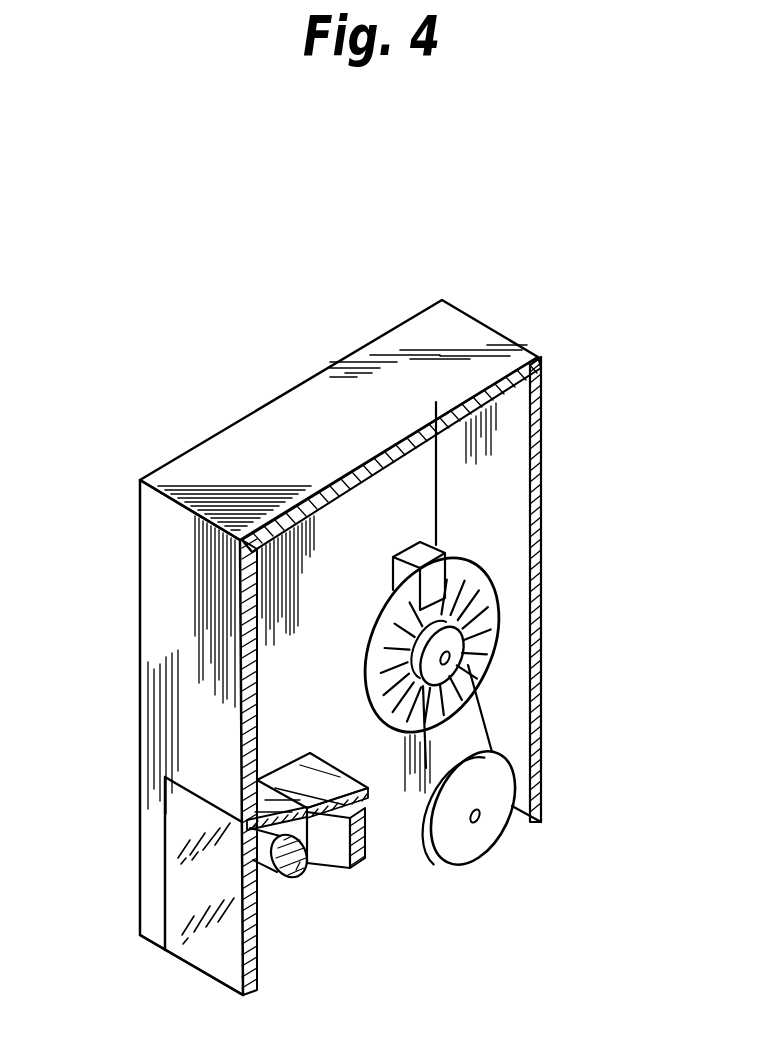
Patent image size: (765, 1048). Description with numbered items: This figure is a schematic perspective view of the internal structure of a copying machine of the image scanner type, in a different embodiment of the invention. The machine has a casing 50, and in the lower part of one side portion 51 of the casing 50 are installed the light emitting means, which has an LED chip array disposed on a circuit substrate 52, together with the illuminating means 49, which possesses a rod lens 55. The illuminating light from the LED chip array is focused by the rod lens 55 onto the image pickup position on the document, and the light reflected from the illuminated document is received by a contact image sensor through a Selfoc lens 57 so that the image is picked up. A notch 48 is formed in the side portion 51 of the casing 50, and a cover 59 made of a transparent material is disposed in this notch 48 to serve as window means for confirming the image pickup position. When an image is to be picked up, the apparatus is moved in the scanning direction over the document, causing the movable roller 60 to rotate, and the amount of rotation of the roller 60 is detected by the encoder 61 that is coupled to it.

The notch 48 is at (193, 793).
The illuminating means 49 is at (343, 920).
The casing 50 is at (248, 435).
The side portion 51 is at (177, 667).
The circuit substrate 52 is at (273, 797).
The rod lens 55 is at (290, 875).
The Selfoc lens 57 is at (367, 853).
The cover 59 is at (205, 950).
The movable roller 60 is at (487, 833).
The encoder 61 is at (493, 582).